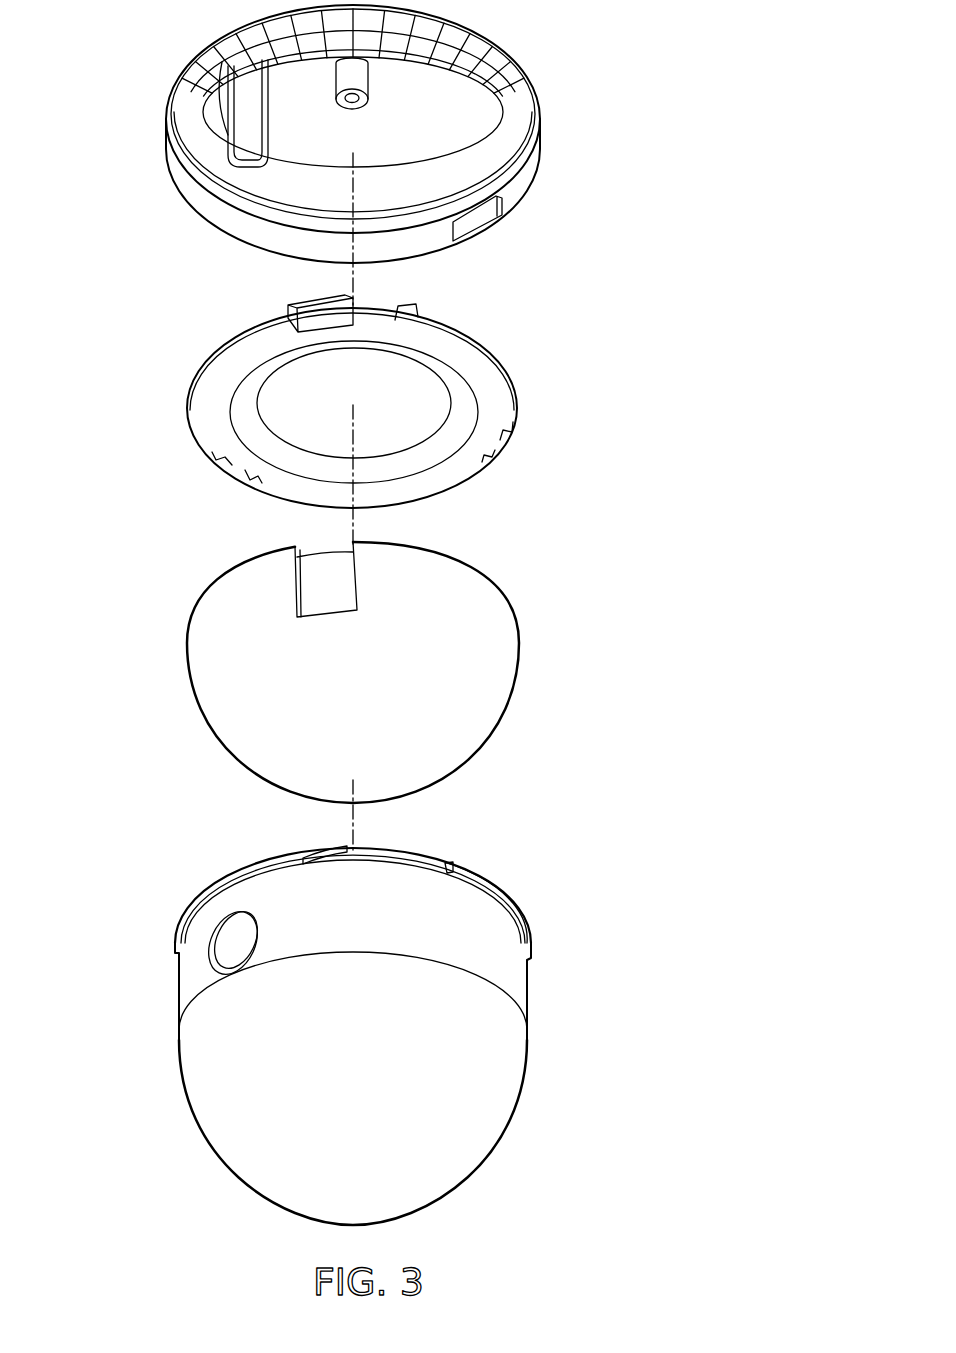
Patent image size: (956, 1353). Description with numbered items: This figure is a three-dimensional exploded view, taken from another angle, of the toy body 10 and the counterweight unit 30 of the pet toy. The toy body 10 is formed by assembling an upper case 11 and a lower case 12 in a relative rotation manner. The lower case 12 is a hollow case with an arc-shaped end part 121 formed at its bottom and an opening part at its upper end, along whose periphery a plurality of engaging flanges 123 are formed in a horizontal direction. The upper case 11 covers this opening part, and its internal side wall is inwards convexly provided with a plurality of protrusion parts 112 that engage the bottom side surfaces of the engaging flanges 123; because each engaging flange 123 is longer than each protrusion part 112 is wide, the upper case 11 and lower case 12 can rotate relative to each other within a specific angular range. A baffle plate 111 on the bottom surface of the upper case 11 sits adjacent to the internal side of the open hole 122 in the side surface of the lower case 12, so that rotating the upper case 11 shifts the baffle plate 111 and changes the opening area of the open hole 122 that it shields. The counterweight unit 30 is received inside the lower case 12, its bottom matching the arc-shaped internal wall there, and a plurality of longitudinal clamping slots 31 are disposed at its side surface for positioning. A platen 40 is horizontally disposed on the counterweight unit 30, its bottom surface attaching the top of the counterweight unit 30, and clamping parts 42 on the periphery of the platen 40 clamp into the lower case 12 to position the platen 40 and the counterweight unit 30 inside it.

The toy body 10 is at (560, 463).
The upper case 11 is at (517, 78).
The baffle plate 111 is at (240, 138).
The protrusion part 112 is at (478, 220).
The lower case 12 is at (518, 993).
The arc-shaped end part 121 is at (467, 1150).
The open hole 122 is at (213, 957).
The engaging flange 123 is at (497, 884).
The counterweight unit 30 is at (502, 677).
The clamping slot 31 is at (308, 580).
The platen 40 is at (502, 377).
The clamping part 42 is at (307, 303).